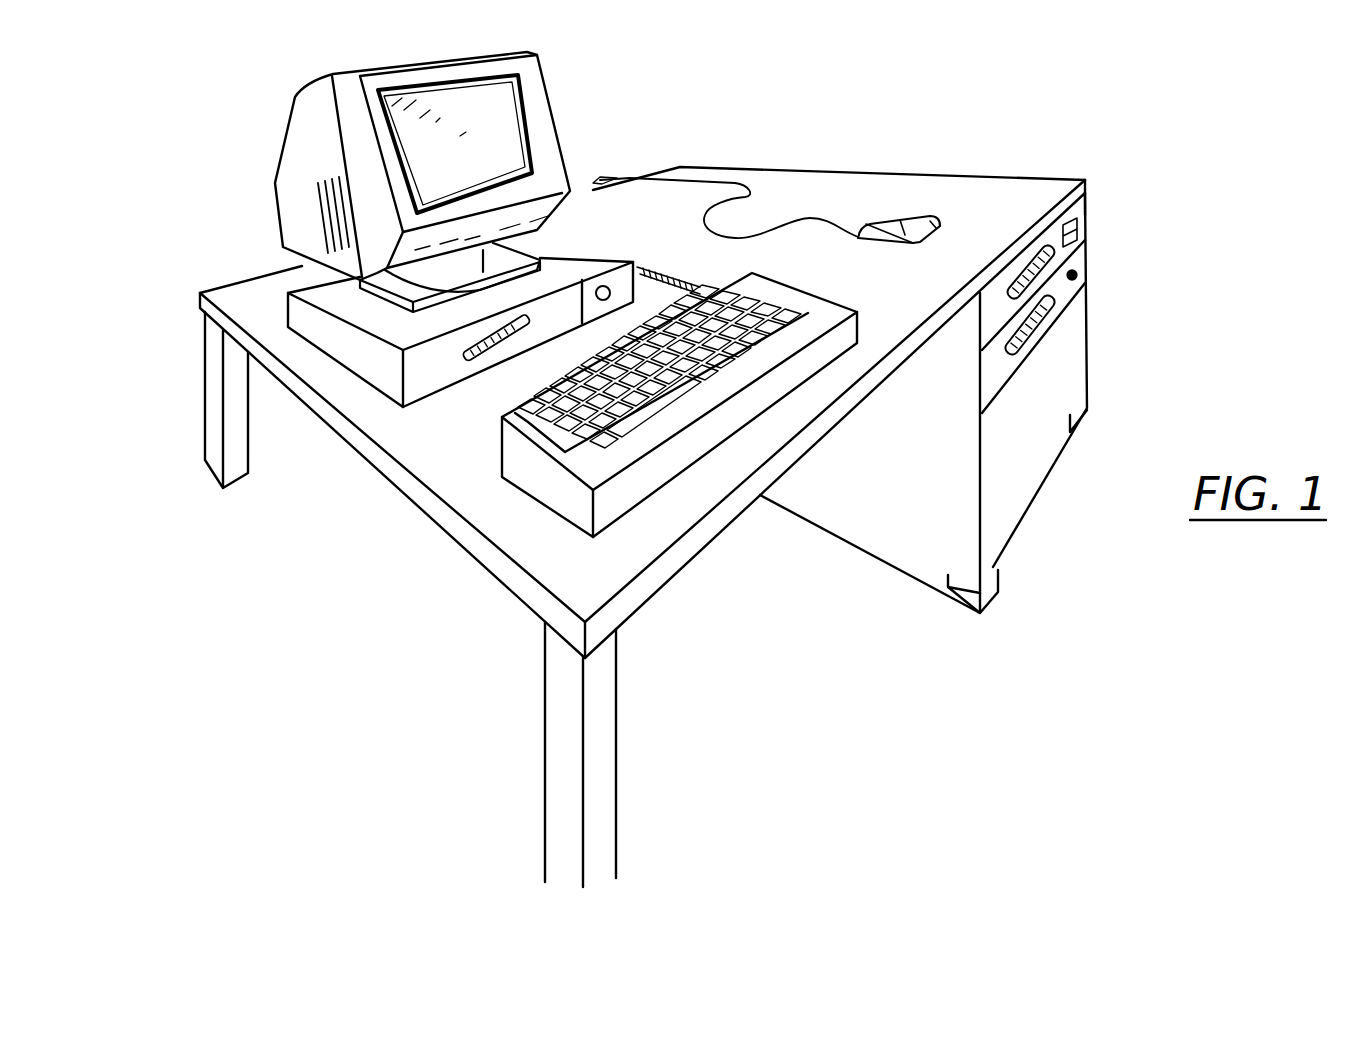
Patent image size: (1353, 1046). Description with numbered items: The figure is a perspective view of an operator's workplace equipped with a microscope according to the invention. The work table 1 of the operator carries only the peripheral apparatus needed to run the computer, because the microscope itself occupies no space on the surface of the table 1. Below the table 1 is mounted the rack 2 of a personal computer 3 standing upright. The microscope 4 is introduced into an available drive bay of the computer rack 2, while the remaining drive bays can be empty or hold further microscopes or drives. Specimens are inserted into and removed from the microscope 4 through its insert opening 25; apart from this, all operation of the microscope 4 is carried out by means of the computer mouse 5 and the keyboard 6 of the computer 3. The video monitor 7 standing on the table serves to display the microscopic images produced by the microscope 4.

The work table 1 is at (827, 170).
The rack 2 is at (1087, 372).
The personal computer 3 is at (1087, 212).
The microscope 4 is at (367, 353).
The computer mouse 5 is at (903, 238).
The keyboard 6 is at (777, 285).
The video monitor 7 is at (550, 93).
The insert opening 25 is at (1053, 300).